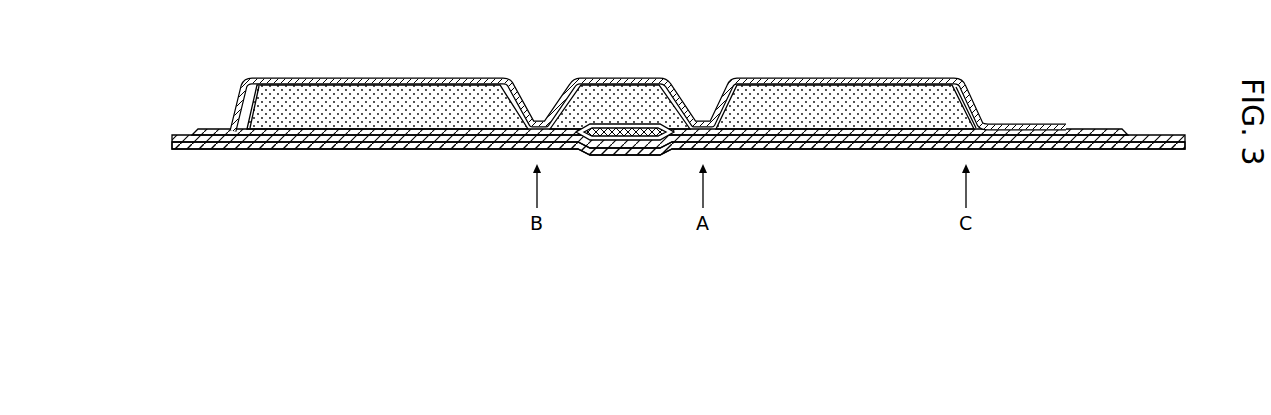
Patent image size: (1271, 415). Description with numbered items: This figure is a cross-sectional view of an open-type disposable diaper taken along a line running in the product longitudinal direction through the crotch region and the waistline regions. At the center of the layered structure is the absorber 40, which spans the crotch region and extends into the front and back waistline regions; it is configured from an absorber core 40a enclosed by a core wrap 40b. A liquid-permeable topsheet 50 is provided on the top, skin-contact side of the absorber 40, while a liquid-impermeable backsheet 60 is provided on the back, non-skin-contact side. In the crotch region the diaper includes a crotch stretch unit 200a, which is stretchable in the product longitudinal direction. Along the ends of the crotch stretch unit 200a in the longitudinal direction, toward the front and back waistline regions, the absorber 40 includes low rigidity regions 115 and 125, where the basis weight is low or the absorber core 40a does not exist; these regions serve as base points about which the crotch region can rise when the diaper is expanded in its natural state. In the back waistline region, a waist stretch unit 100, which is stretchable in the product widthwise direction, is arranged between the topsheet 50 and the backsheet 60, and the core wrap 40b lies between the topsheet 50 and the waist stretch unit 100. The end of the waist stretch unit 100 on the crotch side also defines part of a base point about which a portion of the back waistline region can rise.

The topsheet 50 is at (963, 76).
The absorber 40 is at (663, 89).
The absorber core 40a is at (952, 117).
The core wrap 40b is at (968, 92).
The backsheet 60 is at (216, 150).
The waist stretch unit 100 is at (1032, 141).
The low rigidity region 115 is at (540, 92).
The low rigidity region 125 is at (700, 95).
The crotch stretch unit 200a is at (630, 156).